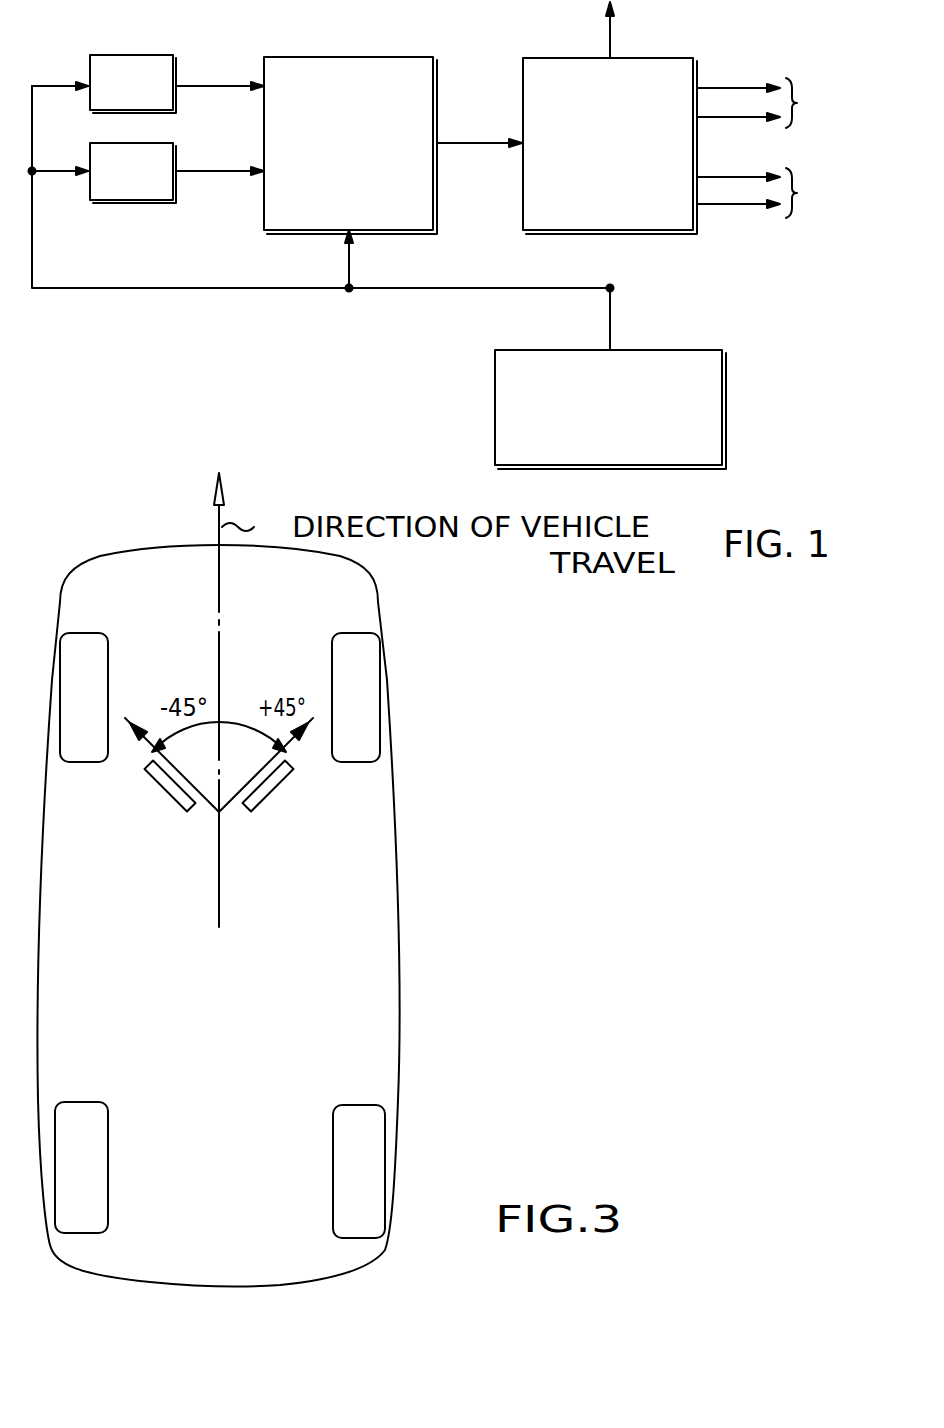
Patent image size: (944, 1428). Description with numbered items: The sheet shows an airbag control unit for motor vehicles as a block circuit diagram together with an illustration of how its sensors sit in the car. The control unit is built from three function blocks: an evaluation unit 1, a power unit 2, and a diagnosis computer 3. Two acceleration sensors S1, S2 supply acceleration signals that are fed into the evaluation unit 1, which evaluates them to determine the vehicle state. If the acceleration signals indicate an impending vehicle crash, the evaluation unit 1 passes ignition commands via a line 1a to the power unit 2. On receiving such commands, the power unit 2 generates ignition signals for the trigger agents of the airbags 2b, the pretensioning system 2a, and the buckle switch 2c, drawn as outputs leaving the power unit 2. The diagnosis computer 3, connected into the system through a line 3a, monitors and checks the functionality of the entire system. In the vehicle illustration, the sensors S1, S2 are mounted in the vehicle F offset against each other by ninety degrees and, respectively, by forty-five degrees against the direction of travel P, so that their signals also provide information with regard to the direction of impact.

In FIG. 1, the acceleration sensor S1 is at (137, 56).
In FIG. 3, the acceleration sensor S1 is at (166, 787).
In FIG. 1, the acceleration sensor S2 is at (135, 202).
In FIG. 3, the acceleration sensor S2 is at (283, 785).
In FIG. 1, the evaluation unit 1 is at (311, 56).
In FIG. 1, the line 1a is at (488, 150).
In FIG. 1, the power unit 2 is at (684, 236).
In FIG. 1, the pretensioning system 2a is at (800, 104).
In FIG. 1, the airbags 2b is at (800, 194).
In FIG. 1, the buckle switch 2c is at (620, 16).
In FIG. 1, the diagnosis computer 3 is at (728, 392).
In FIG. 1, the line 3a is at (612, 310).
In FIG. 3, the vehicle F is at (398, 798).
In FIG. 3, the direction of travel P is at (204, 494).